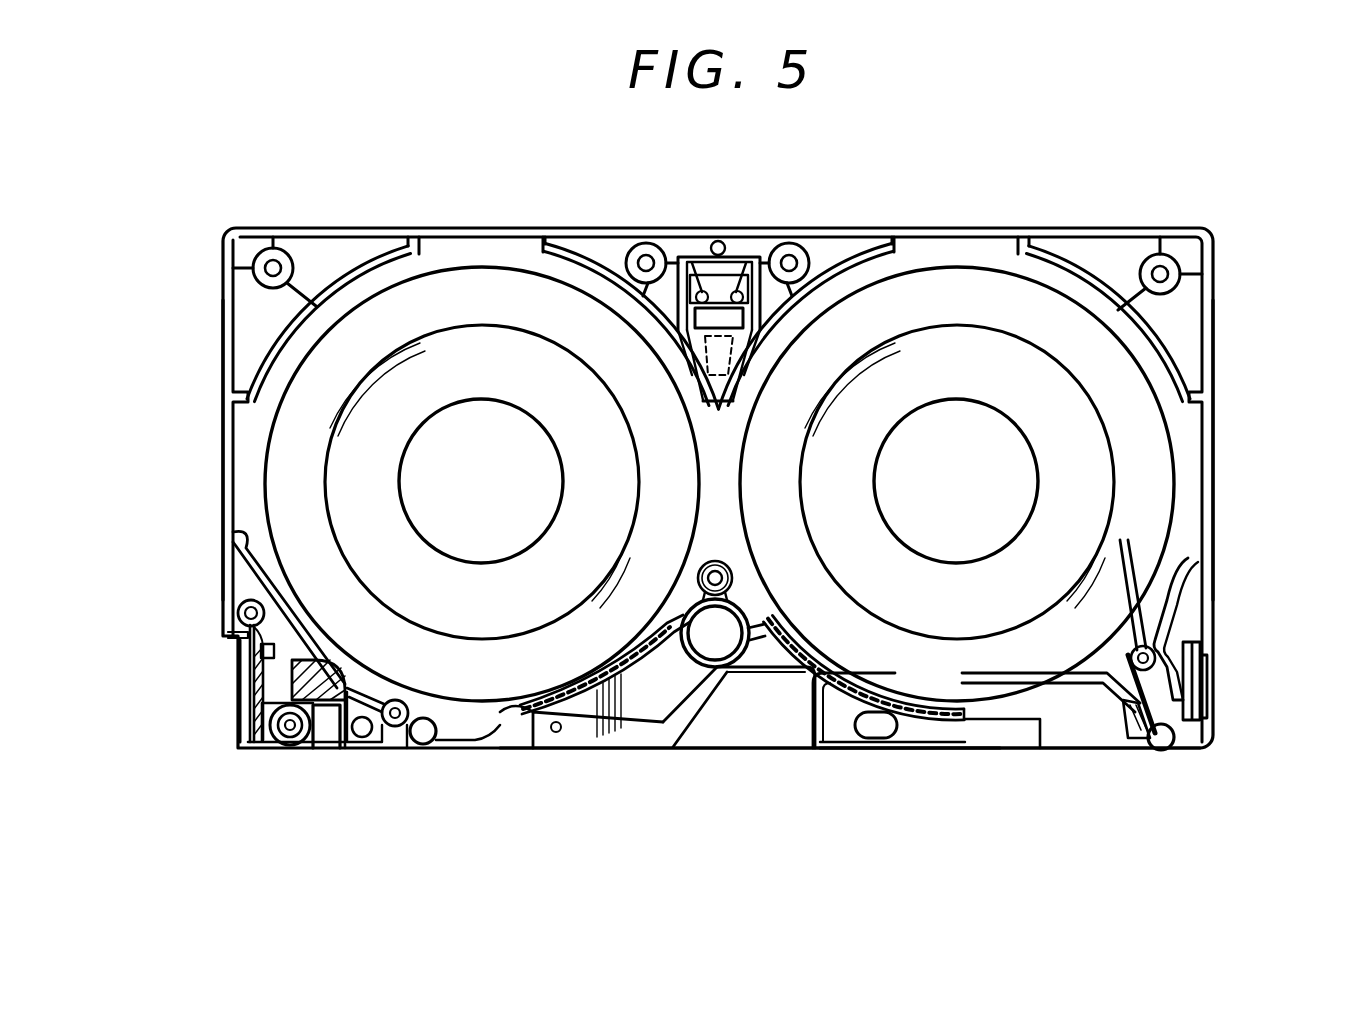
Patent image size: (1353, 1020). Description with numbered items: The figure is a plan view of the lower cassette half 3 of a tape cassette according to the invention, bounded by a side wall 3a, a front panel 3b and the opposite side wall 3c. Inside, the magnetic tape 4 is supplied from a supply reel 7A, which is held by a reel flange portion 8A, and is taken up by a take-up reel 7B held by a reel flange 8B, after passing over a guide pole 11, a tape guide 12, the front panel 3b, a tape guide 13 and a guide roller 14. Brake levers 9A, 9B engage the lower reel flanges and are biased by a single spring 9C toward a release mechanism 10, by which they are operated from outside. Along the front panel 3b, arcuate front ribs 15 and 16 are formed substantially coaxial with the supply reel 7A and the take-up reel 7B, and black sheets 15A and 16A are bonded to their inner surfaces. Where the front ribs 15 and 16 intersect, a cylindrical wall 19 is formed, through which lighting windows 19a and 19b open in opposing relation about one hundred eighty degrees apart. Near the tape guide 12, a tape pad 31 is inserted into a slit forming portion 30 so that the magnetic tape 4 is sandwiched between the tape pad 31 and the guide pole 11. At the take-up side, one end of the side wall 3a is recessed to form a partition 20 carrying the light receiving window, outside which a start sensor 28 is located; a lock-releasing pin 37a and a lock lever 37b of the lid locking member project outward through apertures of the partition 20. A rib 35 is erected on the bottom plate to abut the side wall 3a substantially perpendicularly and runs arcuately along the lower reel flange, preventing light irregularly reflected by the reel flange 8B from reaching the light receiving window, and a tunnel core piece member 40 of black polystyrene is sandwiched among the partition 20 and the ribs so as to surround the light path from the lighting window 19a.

The lower cassette half 3 is at (1122, 227).
The side wall 3a is at (225, 302).
The front panel 3b is at (912, 750).
The right side wall of housing 3c is at (1213, 302).
The magnetic tape 4 is at (760, 750).
The supply reel 7A is at (936, 395).
The take-up reel 7B is at (478, 395).
The reel flange portion 8A is at (981, 258).
The reel flange 8B is at (498, 258).
The brake lever 9A is at (791, 243).
The brake lever 9B is at (644, 243).
The single spring 9C is at (726, 250).
The release mechanism 10 is at (706, 255).
The guide pole 11 is at (1143, 648).
The tape guide 12 is at (1172, 744).
The tape guide 13 is at (431, 746).
The guide roller 14 is at (393, 728).
The front rib 15 is at (1010, 722).
The black sheet 15A is at (862, 682).
The front rib 16 is at (592, 688).
The black sheet 16A is at (577, 672).
The cylindrical wall 19 is at (724, 580).
The lighting window 19a is at (672, 644).
The lighting window 19b is at (752, 634).
The partition 20 is at (278, 750).
The start sensor 28 is at (310, 750).
The slit forming portion 30 is at (1125, 730).
The tape pad 31 is at (1130, 663).
The rib 35 is at (248, 538).
The lock-releasing pin 37a is at (240, 608).
The lock lever 37b is at (240, 655).
The tunnel core piece member 40 is at (245, 710).